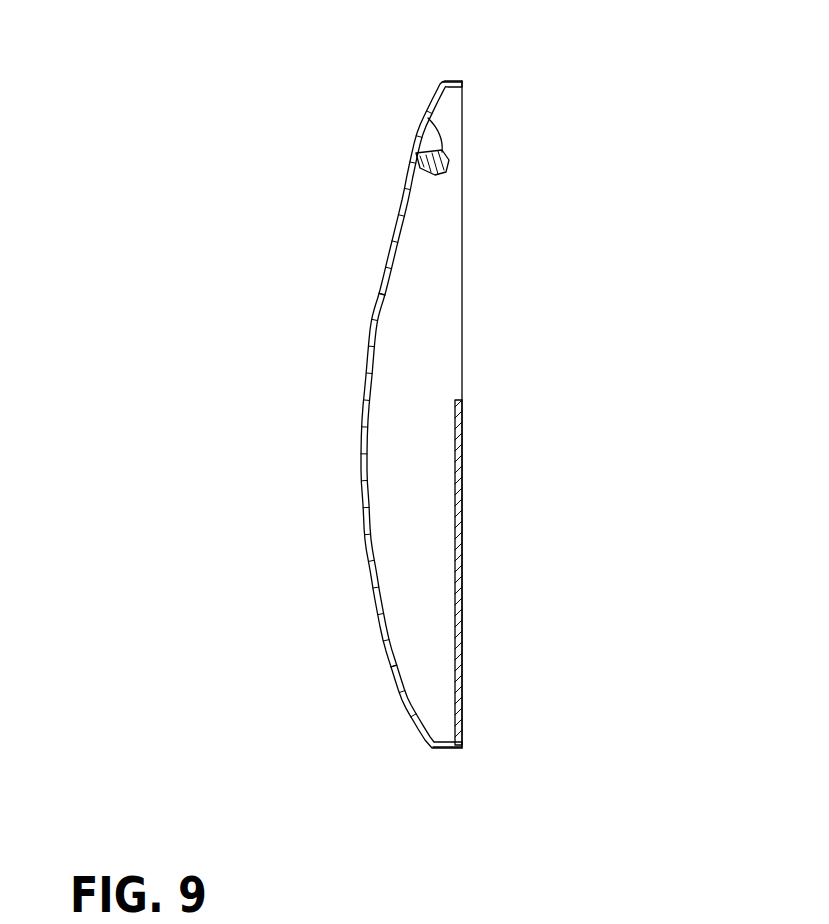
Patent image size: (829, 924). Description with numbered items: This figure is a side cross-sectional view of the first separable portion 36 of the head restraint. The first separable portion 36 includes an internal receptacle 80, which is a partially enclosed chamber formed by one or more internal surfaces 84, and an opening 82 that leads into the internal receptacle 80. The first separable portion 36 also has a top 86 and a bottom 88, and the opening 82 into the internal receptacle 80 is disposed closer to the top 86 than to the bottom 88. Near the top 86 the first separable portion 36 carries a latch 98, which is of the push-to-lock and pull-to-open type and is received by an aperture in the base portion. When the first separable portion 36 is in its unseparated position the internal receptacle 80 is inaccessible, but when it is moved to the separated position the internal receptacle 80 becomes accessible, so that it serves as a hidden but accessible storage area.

The first separable portion 36 is at (515, 190).
The internal receptacle 80 is at (413, 581).
The opening 82 is at (405, 329).
The internal surfaces 84 is at (388, 273).
The top 86 is at (455, 80).
The bottom 88 is at (447, 750).
The latch 98 is at (430, 125).